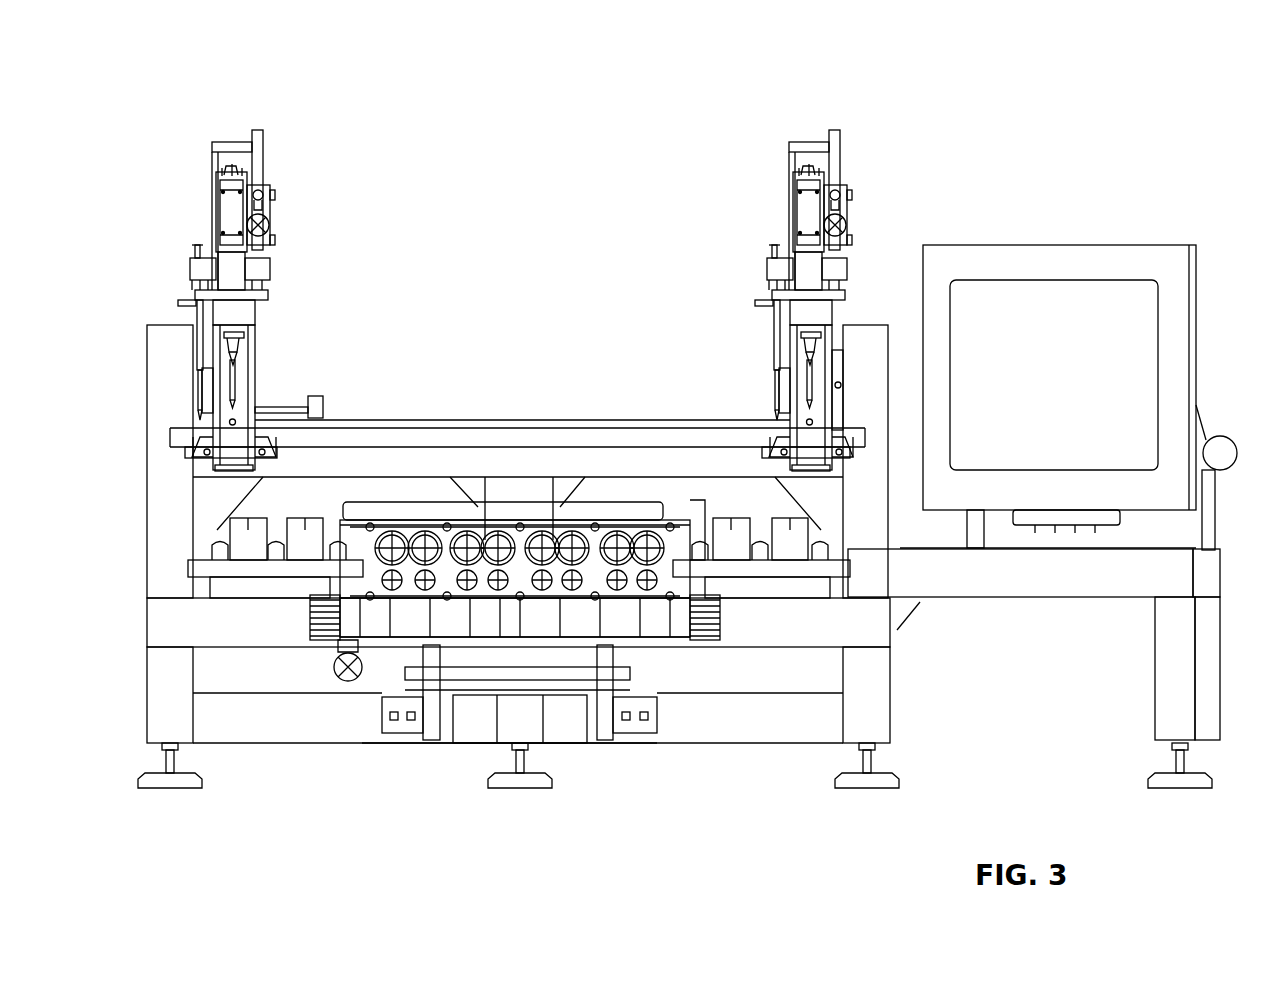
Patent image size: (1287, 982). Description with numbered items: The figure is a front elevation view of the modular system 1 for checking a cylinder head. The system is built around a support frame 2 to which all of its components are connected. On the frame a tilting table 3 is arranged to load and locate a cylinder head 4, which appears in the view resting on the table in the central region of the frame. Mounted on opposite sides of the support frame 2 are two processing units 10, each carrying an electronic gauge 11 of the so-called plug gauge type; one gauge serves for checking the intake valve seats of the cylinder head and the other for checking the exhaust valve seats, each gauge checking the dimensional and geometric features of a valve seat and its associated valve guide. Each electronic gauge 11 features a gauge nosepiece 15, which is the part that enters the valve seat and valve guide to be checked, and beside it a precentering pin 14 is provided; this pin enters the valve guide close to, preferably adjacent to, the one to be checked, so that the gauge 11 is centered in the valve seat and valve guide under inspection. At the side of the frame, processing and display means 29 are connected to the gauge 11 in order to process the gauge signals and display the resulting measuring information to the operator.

The modular system 1 is at (459, 162).
The support frame 2 is at (287, 718).
The tilting table 3 is at (739, 622).
The cylinder head 4 is at (492, 520).
The processing unit 10 is at (233, 122).
The electronic gauge 11 is at (232, 212).
The precentering pin 14 is at (196, 392).
The gauge nosepiece 15 is at (233, 380).
The processing and display means 29 is at (1062, 320).